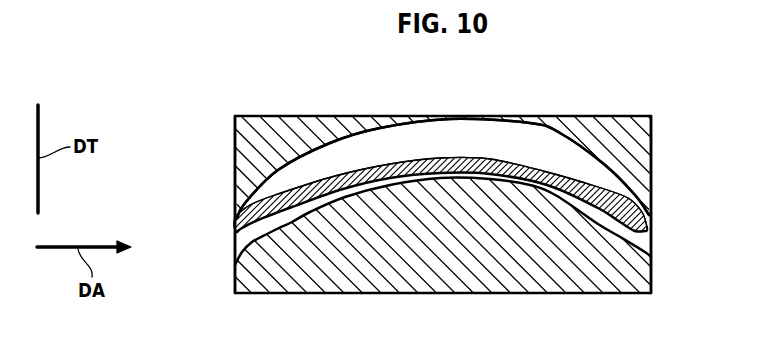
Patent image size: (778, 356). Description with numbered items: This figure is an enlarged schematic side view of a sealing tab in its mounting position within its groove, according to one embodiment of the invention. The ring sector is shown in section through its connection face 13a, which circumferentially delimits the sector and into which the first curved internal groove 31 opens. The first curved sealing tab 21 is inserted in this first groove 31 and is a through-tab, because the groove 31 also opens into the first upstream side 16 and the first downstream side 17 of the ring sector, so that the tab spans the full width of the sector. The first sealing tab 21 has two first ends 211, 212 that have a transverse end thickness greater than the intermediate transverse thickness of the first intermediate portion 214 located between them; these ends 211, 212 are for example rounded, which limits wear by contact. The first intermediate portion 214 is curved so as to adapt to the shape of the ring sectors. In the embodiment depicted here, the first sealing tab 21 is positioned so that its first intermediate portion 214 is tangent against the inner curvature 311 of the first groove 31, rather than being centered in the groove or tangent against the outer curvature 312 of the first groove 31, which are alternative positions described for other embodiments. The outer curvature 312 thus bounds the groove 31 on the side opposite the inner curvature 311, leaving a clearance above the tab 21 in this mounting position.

The connection face 13a is at (465, 255).
The outer curvature of the first groove 312 is at (547, 140).
The first curved internal groove 31 is at (387, 150).
The inner curvature of the first groove 311 is at (352, 188).
The first curved sealing tab 21 is at (340, 172).
The first intermediate portion 214 is at (445, 162).
The first end 211 is at (234, 232).
The first end 212 is at (653, 235).
The first upstream side 16 is at (234, 247).
The first downstream side 17 is at (653, 244).